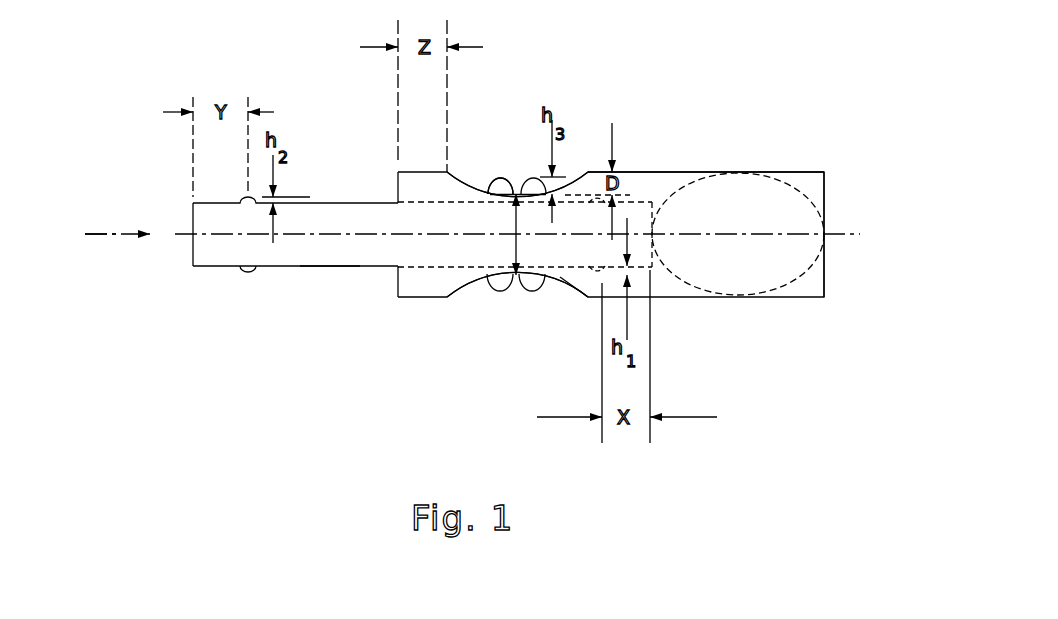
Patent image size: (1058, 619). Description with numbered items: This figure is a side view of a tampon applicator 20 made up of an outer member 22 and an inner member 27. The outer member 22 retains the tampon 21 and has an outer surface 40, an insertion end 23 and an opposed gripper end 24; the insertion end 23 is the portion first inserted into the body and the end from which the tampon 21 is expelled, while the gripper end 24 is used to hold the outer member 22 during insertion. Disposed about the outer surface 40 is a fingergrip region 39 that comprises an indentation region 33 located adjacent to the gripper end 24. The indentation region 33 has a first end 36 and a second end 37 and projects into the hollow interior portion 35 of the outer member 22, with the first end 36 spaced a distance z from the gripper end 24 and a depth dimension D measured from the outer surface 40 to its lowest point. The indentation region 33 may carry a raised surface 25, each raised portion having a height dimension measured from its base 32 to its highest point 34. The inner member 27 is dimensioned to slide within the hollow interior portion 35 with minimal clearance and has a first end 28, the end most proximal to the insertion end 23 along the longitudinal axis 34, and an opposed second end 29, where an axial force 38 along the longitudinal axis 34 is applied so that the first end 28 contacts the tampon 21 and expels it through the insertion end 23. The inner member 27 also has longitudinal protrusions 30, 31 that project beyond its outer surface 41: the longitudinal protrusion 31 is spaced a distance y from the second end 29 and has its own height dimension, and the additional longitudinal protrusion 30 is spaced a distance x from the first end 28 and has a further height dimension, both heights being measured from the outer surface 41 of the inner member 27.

The tampon applicator 20 is at (640, 98).
The tampon 21 is at (775, 198).
The outer member 22 is at (667, 172).
The insertion end 23 is at (832, 247).
The gripper end 24 is at (382, 180).
The raised surface 25 is at (492, 183).
The inner member 27 is at (293, 257).
The first end 28 is at (655, 238).
The second end 29 is at (193, 238).
The longitudinal protrusion 30 is at (590, 268).
The longitudinal protrusion 31 is at (248, 273).
The base 32 is at (505, 194).
The indentation region 33 is at (507, 245).
The longitudinal axis 34 is at (102, 227).
The hollow interior portion 35 is at (388, 277).
The first end 36 is at (446, 298).
The second end 37 is at (587, 298).
The axial force 38 is at (123, 237).
The fingergrip region 39 is at (586, 172).
The outer surface 40 is at (760, 148).
The outer surface 41 is at (328, 268).